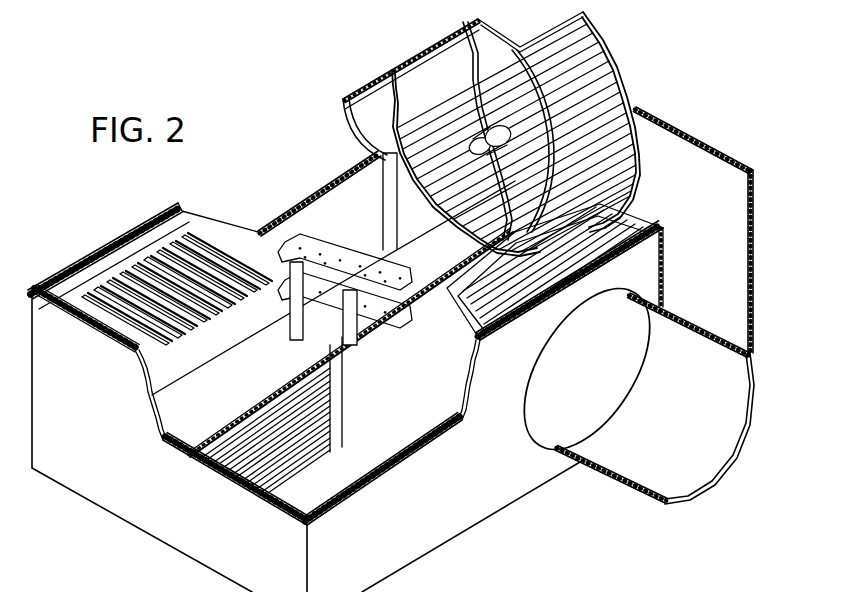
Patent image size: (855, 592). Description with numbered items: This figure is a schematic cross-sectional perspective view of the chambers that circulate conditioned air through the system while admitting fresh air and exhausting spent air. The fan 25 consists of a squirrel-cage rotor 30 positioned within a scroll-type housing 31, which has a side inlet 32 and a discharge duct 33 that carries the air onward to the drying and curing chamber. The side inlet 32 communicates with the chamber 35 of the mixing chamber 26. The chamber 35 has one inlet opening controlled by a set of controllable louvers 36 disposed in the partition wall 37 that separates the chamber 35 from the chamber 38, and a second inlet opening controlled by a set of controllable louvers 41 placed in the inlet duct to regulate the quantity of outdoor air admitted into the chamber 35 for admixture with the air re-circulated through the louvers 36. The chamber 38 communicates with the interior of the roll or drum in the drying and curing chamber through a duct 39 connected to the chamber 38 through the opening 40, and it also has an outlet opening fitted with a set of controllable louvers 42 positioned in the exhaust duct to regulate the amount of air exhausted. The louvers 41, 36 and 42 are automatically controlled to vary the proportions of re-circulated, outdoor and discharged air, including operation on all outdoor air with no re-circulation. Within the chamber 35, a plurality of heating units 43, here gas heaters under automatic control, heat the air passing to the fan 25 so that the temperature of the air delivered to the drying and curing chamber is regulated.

The fan 25 is at (349, 132).
The mixing chamber 26 is at (306, 208).
The squirrel-cage rotor 30 is at (615, 86).
The scroll-type housing 31 is at (505, 38).
The side inlet 32 is at (420, 261).
The discharge duct 33 is at (703, 147).
The chamber 35 is at (232, 395).
The controllable louvers 36 is at (303, 428).
The partition wall 37 is at (430, 373).
The chamber 38 is at (425, 441).
The duct 39 is at (667, 488).
The opening 40 is at (533, 408).
The controllable louvers 41 is at (192, 247).
The controllable louvers 42 is at (487, 298).
The heating units 43 is at (325, 285).